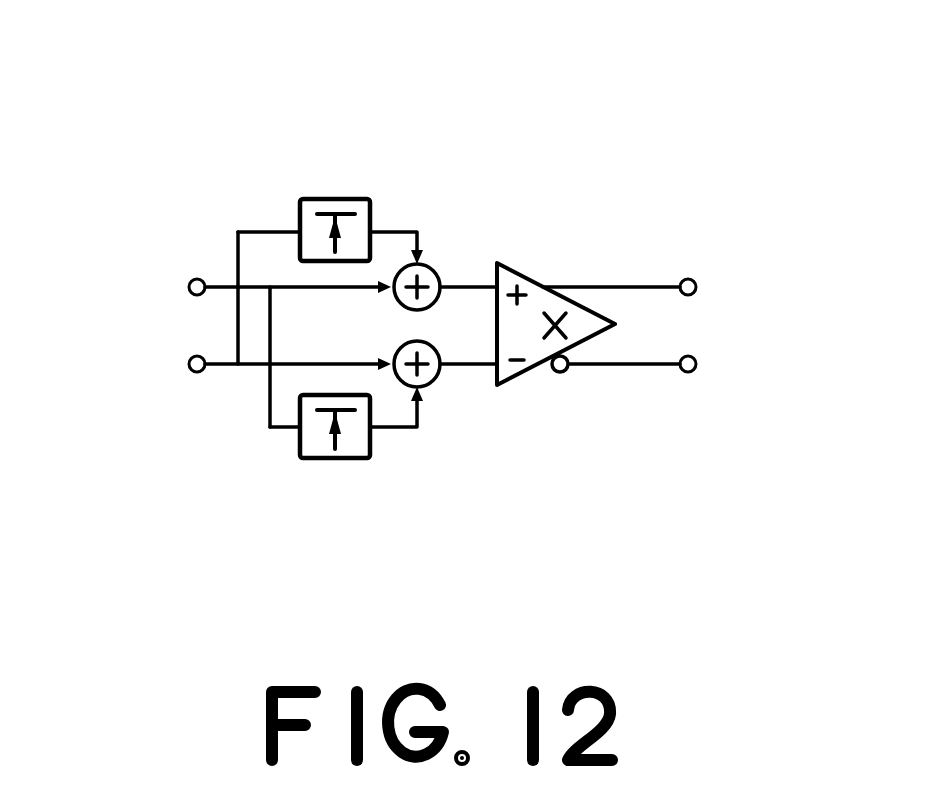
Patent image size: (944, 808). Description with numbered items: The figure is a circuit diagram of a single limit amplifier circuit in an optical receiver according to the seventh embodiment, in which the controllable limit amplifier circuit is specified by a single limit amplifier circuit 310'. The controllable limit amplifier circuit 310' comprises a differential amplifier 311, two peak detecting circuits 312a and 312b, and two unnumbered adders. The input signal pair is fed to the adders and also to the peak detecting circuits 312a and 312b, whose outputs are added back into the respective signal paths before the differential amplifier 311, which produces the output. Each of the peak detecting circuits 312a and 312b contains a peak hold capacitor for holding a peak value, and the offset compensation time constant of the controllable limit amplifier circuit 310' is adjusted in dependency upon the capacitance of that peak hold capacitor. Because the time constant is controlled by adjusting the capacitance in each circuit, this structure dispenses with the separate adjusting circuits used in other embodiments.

The controllable limit amplifier circuit 310' is at (473, 282).
The differential amplifier 311 is at (534, 285).
The peak detecting circuit 312a is at (330, 197).
The peak detecting circuit 312b is at (328, 459).